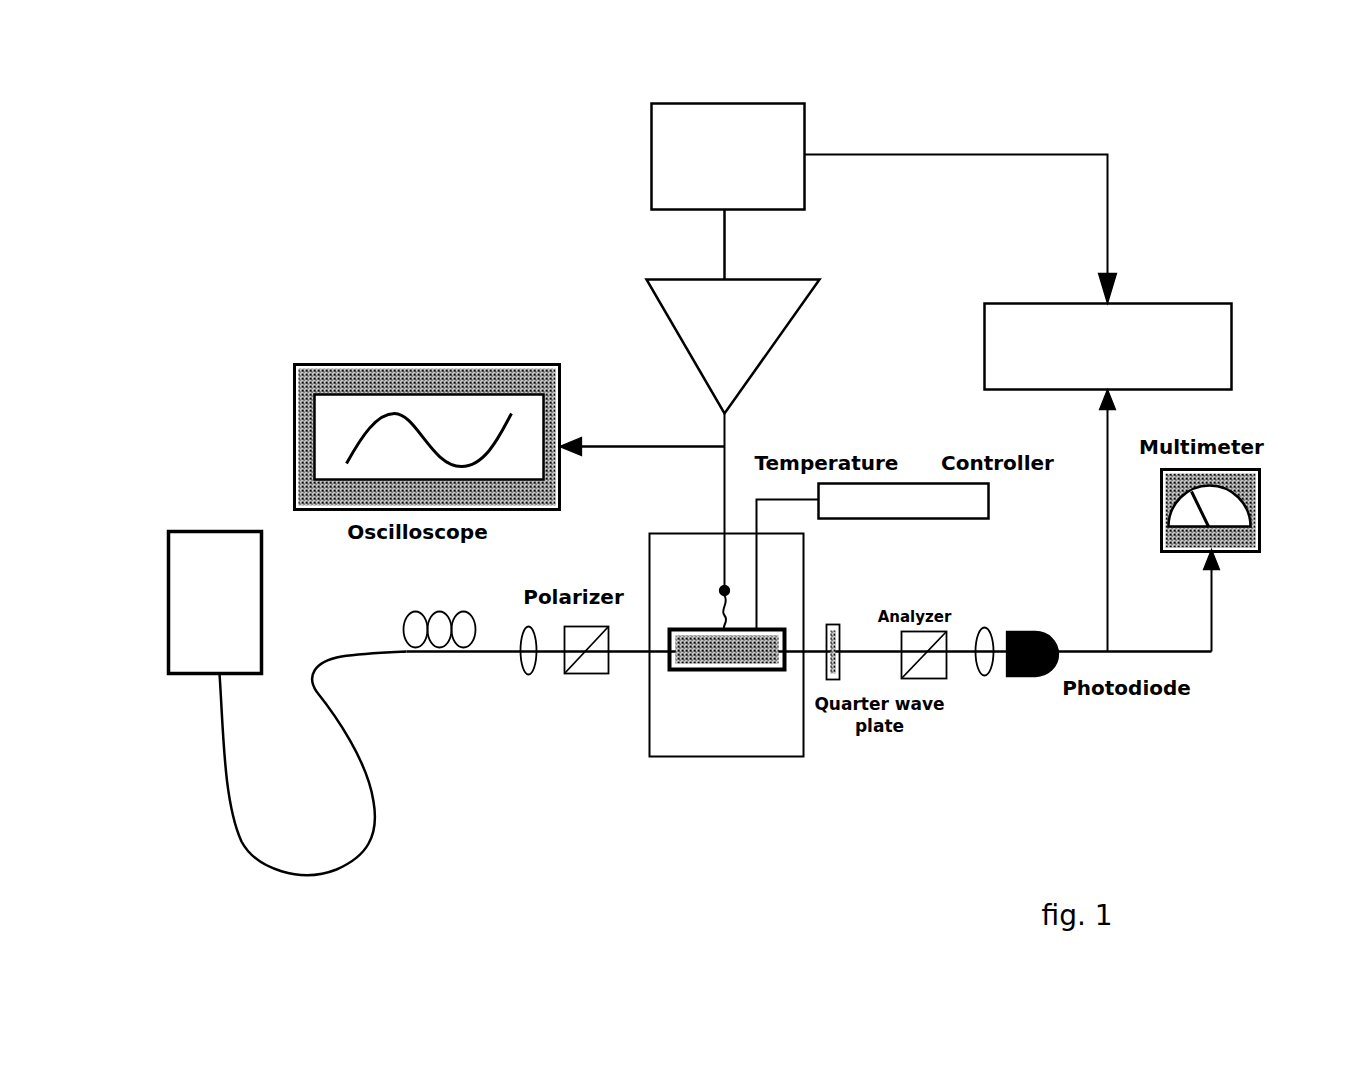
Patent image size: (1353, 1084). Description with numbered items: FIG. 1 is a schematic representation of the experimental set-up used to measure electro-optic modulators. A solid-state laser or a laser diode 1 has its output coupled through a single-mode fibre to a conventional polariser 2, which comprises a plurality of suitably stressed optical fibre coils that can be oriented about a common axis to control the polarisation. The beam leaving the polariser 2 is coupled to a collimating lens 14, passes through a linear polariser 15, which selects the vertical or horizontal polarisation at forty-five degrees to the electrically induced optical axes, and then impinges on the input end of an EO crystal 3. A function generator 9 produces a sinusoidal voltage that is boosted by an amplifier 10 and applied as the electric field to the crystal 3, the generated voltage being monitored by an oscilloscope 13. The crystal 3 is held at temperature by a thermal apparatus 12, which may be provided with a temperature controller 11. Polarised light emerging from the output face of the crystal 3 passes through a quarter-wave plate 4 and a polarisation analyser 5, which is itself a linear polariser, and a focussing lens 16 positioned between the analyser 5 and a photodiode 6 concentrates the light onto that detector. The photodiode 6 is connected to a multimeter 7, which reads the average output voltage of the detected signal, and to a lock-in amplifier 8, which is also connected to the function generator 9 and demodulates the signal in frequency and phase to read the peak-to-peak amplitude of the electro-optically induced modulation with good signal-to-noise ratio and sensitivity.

The laser diode 1 is at (220, 530).
The polariser 2 is at (437, 650).
The EO crystal 3 is at (677, 668).
The quarter-wave plate 4 is at (838, 623).
The polarisation analyser 5 is at (920, 628).
The photodiode 6 is at (1048, 632).
The multimeter 7 is at (1258, 512).
The lock-in amplifier 8 is at (1230, 350).
The function generator 9 is at (748, 102).
The amplifier 10 is at (772, 278).
The temperature controller 11 is at (987, 500).
The thermal apparatus 12 is at (727, 669).
The oscilloscope 13 is at (450, 363).
The collimating lens 14 is at (527, 673).
The linear polariser 15 is at (588, 672).
The focussing lens 16 is at (990, 608).